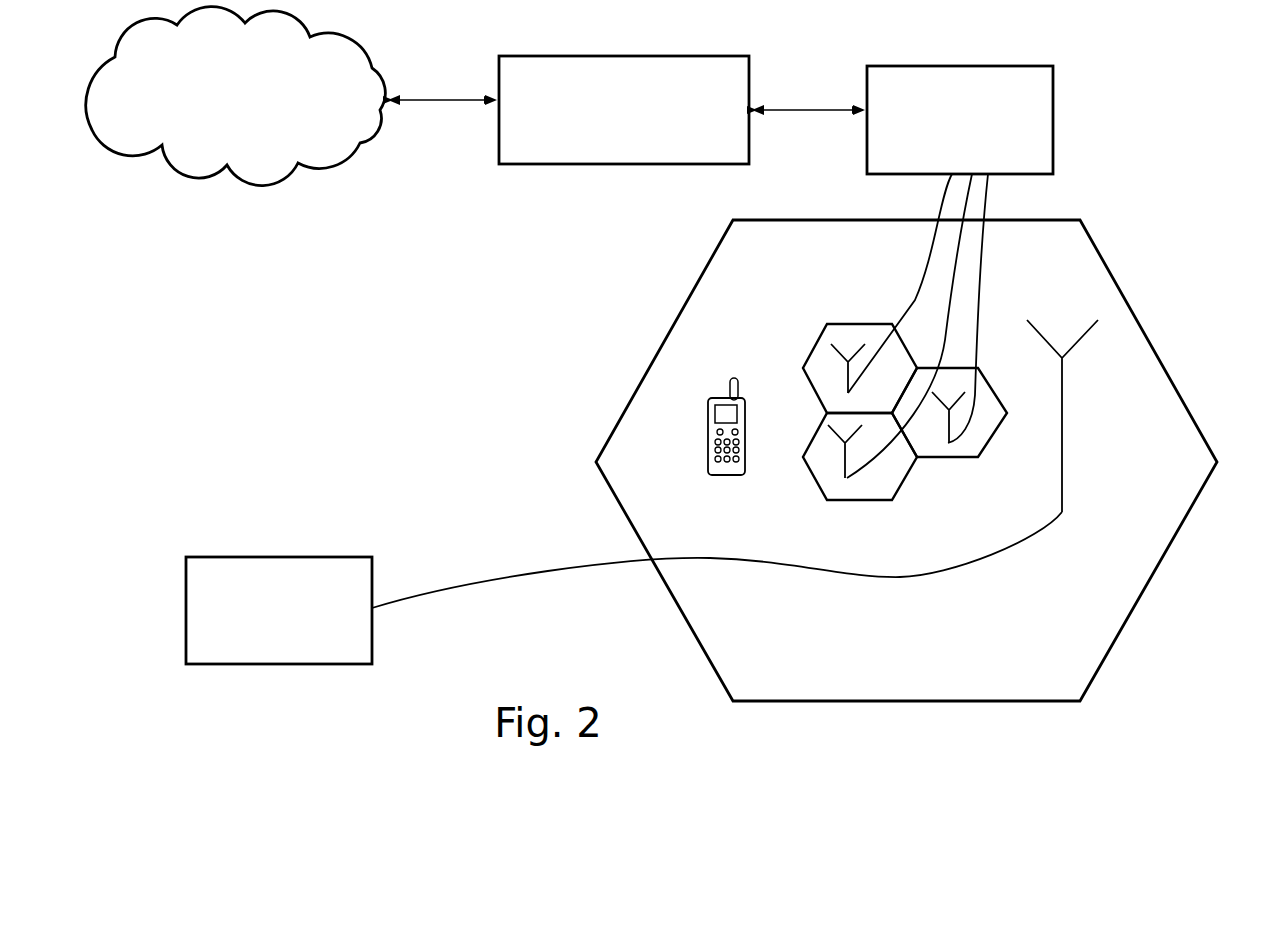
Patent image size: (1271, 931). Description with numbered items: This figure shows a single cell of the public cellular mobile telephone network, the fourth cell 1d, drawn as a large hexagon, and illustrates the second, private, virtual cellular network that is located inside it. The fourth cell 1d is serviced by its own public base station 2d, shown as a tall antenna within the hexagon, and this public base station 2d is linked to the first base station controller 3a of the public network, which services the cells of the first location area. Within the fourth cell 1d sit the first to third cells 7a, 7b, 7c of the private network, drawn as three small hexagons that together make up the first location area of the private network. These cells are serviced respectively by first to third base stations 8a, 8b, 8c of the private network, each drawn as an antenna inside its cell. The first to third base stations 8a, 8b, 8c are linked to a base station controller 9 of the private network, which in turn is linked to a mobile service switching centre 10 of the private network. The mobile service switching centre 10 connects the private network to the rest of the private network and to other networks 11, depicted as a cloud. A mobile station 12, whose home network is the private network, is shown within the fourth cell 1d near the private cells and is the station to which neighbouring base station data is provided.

The other networks 11 is at (309, 131).
The mobile service switching centre 10 is at (695, 56).
The base station controller 9 is at (1027, 66).
The first base station controller 3a is at (302, 557).
The fourth cell 1d is at (1167, 403).
The base station 2d is at (1063, 437).
The first cell 7a is at (862, 337).
The second cell 7b is at (993, 370).
The third cell 7c is at (883, 488).
The first base station 8a is at (848, 371).
The second base station 8b is at (949, 427).
The third base station 8c is at (845, 459).
The mobile station 12 is at (708, 443).